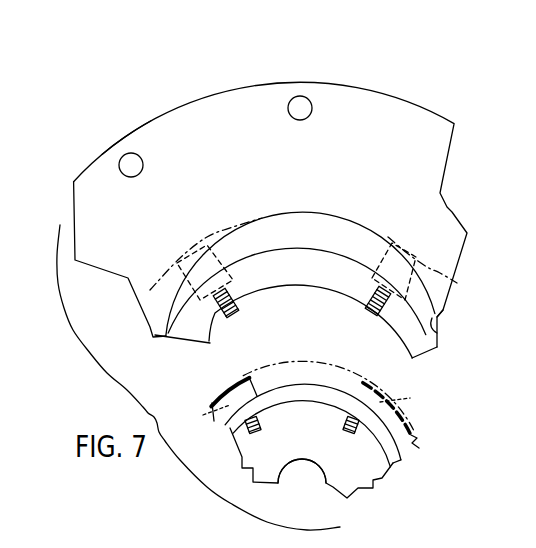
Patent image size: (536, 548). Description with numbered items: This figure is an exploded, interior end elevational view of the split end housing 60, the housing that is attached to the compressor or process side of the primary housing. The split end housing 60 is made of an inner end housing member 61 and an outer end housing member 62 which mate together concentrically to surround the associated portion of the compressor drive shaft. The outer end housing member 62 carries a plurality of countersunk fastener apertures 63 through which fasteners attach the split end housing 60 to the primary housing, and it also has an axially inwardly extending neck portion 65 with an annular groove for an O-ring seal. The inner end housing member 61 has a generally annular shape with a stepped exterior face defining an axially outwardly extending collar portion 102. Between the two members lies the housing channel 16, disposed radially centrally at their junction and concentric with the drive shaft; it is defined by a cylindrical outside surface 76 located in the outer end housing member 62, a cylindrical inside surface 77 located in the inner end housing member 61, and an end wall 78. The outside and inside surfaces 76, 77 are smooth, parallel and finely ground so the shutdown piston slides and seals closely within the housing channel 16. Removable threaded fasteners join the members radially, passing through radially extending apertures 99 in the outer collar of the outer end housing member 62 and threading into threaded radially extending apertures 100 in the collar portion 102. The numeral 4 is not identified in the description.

The split end housing 60 is at (440, 97).
The outer end housing member 62 is at (123, 137).
The countersunk fastener apertures 63 is at (127, 160).
The neck portion 65 is at (320, 212).
The radially extending apertures 99 is at (215, 312).
The inner end housing member 61 is at (400, 458).
The collar portion 102 is at (366, 476).
The inside surface 77 is at (243, 378).
The end wall 78 is at (272, 282).
The threaded radially extending apertures 100 is at (213, 420).
The housing channel 16 is at (191, 333).
The outside surface 76 is at (438, 342).
The vehicle 4 is at (4, 271).